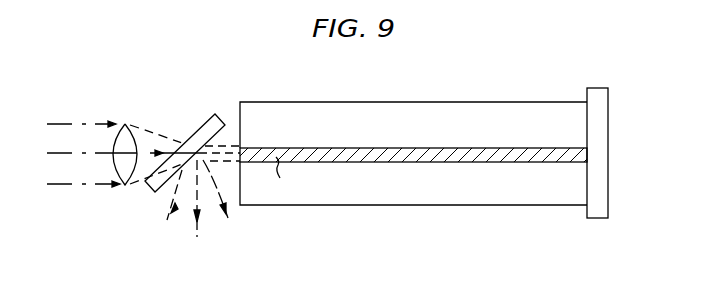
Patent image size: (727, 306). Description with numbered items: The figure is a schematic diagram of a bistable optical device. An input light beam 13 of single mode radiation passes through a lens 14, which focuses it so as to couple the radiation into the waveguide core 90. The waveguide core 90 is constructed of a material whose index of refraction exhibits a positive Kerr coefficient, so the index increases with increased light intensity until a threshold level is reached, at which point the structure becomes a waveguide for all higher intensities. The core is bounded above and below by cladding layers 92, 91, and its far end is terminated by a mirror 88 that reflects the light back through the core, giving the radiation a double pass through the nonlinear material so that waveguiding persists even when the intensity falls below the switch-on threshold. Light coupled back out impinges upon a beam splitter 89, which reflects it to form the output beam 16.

The input light beam 13 is at (69, 179).
The lens 14 is at (127, 126).
The output beam 16 is at (213, 210).
The mirror 88 is at (600, 125).
The beam splitter 89 is at (206, 126).
The waveguide core 90 is at (442, 148).
The cladding layer 91 is at (485, 197).
The cladding layer 92 is at (522, 117).